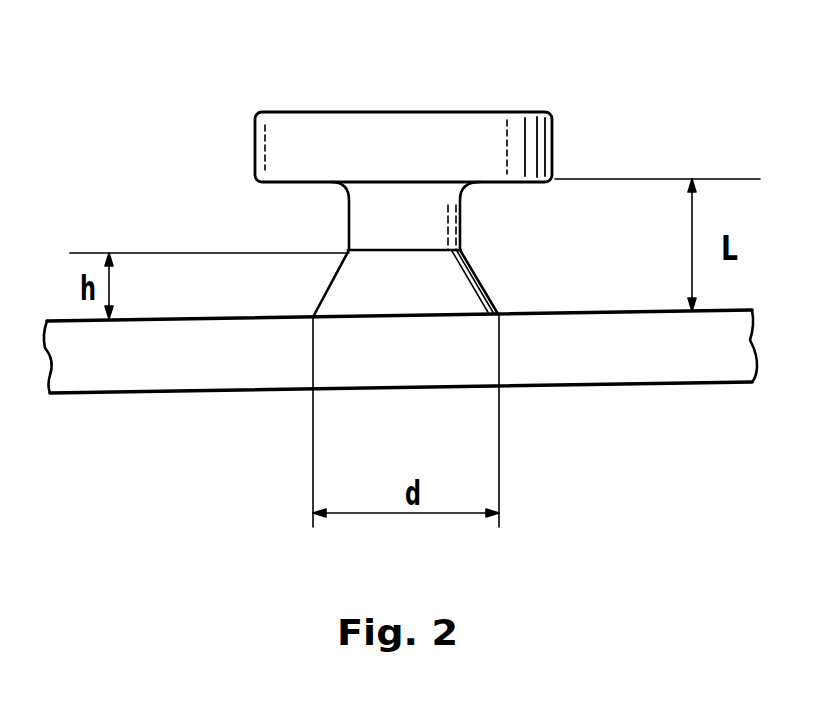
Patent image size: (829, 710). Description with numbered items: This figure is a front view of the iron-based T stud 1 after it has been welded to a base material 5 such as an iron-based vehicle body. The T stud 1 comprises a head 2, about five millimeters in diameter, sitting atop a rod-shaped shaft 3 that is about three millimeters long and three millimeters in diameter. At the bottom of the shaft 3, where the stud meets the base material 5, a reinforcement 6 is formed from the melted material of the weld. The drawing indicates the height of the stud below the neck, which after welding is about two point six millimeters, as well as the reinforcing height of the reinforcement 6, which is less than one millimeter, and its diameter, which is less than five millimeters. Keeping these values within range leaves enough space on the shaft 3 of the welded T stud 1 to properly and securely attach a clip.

The T stud 1 is at (447, 174).
The head 2 is at (427, 112).
The shaft 3 is at (347, 225).
The base material 5 is at (203, 390).
The reinforcement 6 is at (486, 283).